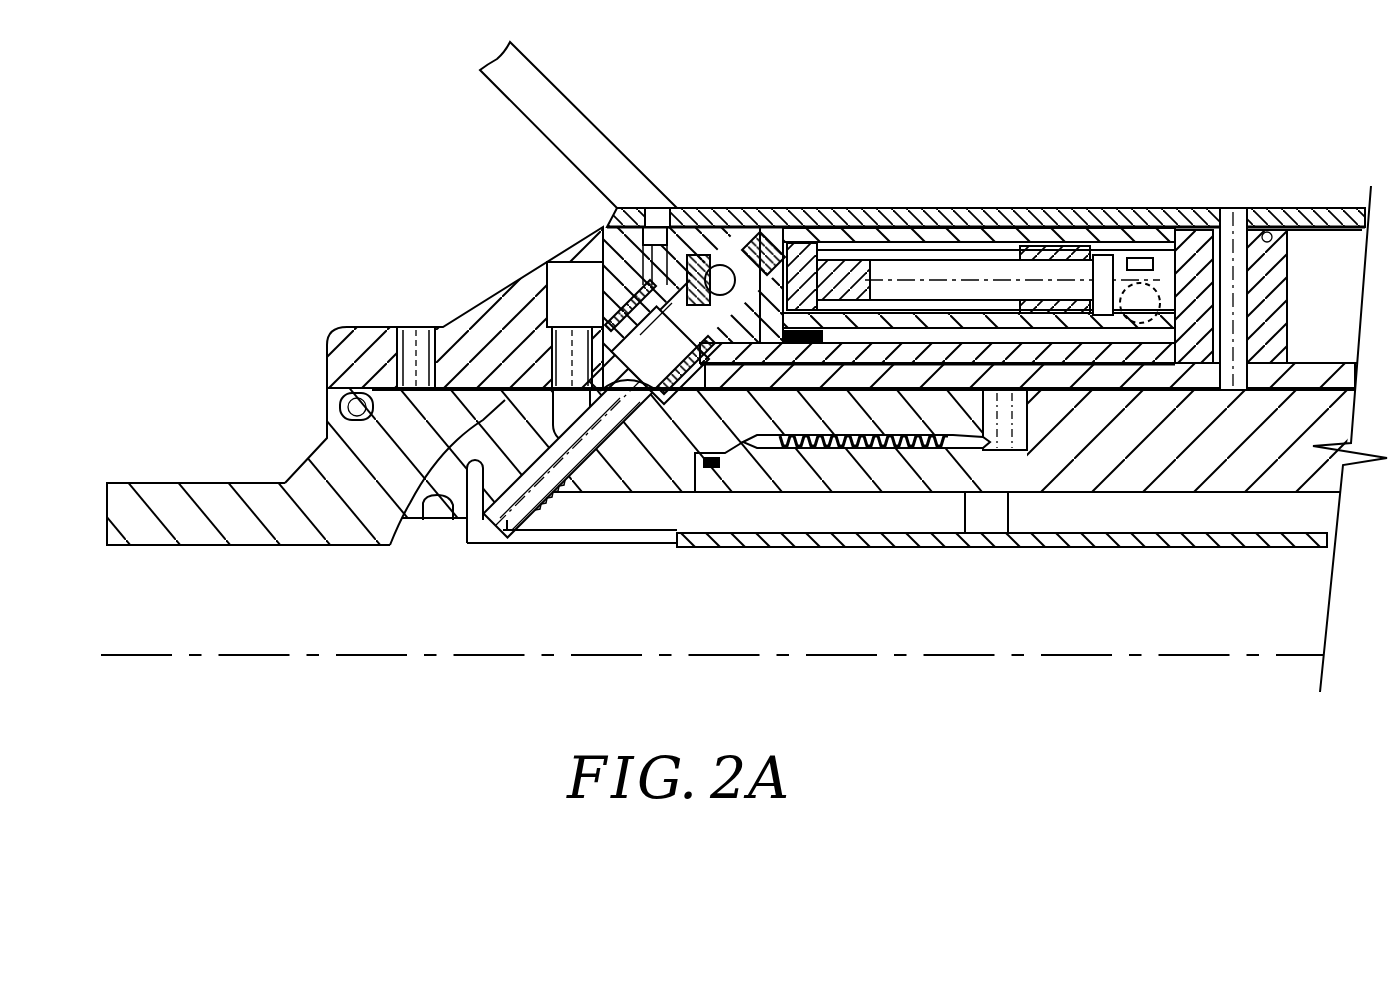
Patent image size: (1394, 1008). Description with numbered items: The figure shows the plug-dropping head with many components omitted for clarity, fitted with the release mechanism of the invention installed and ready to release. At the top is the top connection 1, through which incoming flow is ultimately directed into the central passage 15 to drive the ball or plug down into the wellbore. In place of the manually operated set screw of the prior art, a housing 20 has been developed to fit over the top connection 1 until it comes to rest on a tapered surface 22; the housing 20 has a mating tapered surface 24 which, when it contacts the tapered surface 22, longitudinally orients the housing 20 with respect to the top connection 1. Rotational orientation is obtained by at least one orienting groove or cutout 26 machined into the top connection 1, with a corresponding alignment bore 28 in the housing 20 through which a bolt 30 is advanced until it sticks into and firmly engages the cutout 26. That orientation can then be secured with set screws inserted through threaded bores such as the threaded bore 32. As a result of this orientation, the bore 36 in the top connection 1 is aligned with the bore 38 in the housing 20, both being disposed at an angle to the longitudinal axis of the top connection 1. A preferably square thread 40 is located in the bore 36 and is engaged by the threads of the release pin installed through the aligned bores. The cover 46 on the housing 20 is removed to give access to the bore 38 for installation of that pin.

The top connection 1 is at (157, 482).
The central passage 15 is at (923, 631).
The housing 20 is at (463, 318).
The tapered surface 22 is at (290, 468).
The mating tapered surface 24 is at (348, 410).
The orienting groove or cutout 26 is at (393, 543).
The alignment bore 28 is at (602, 226).
The bolt 30 is at (535, 389).
The threaded bore 32 is at (408, 327).
The bore 36 is at (423, 520).
The bore 38 is at (604, 392).
The square thread 40 is at (437, 527).
The cover 46 is at (983, 207).